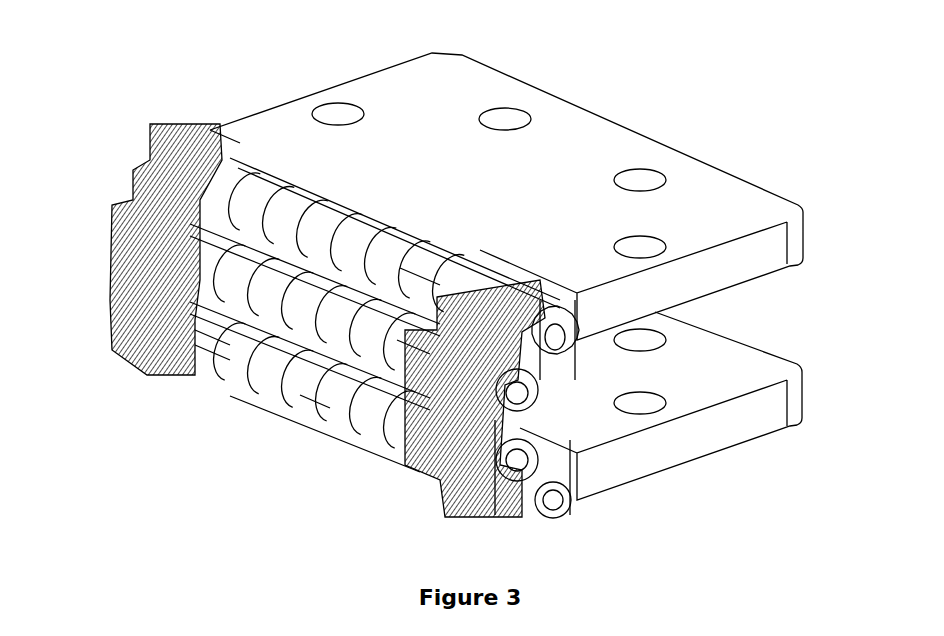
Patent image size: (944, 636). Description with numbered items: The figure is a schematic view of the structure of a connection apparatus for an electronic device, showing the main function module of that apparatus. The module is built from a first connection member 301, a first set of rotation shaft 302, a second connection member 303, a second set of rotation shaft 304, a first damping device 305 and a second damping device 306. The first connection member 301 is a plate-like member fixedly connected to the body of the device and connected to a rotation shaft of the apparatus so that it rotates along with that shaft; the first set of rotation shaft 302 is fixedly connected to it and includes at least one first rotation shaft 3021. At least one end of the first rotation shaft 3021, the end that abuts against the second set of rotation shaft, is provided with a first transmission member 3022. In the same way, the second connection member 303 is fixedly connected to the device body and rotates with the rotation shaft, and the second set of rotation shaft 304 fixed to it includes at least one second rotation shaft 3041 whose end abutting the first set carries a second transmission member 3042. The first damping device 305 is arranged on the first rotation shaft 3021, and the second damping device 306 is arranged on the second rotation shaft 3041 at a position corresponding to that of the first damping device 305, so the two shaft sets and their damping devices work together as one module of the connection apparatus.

The first connection member 301 is at (412, 130).
The first set of rotation shaft 302 is at (262, 262).
The second connection member 303 is at (700, 380).
The second set of rotation shaft 304 is at (410, 458).
The first damping device 305 is at (337, 252).
The second damping device 306 is at (307, 393).
The first rotation shaft 3021 is at (413, 273).
The first transmission member 3022 is at (547, 293).
The second rotation shaft 3041 is at (200, 340).
The second transmission member 3042 is at (110, 320).